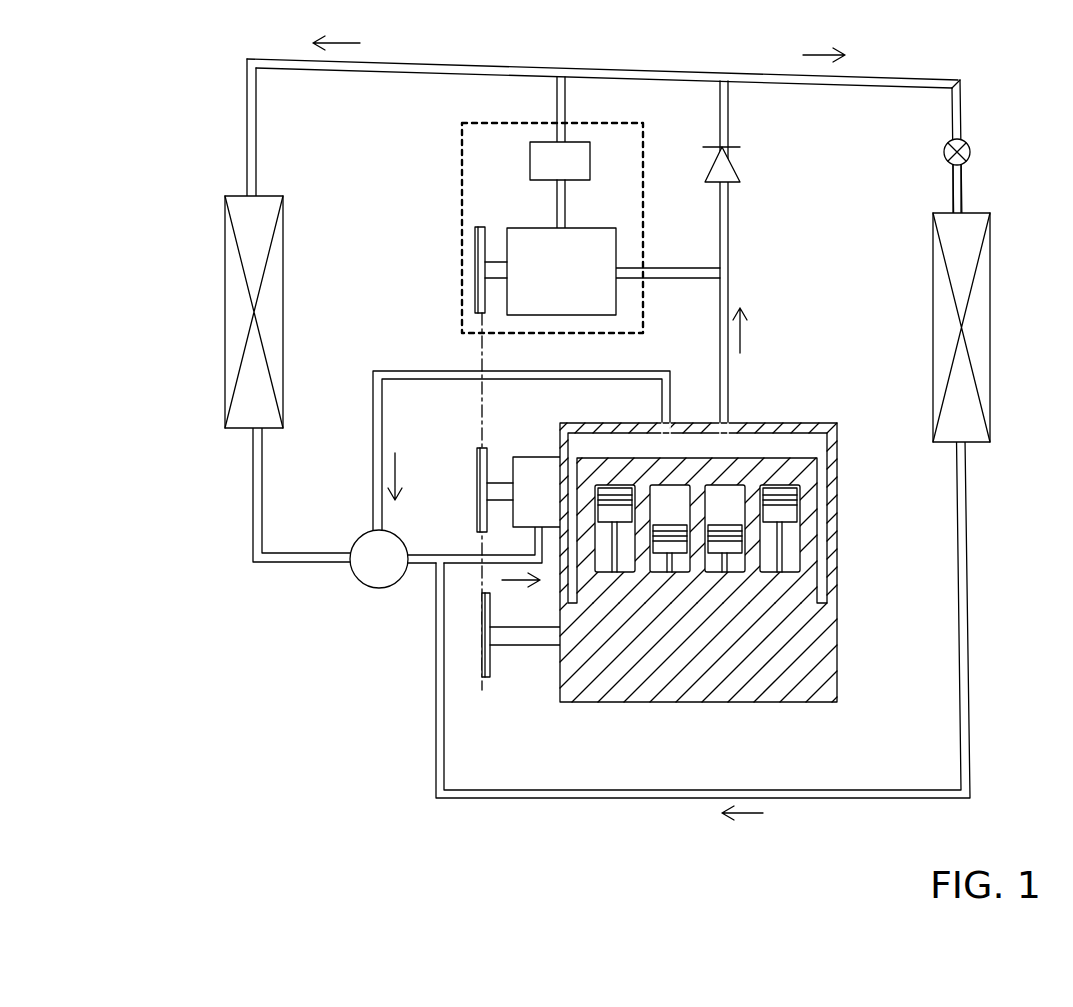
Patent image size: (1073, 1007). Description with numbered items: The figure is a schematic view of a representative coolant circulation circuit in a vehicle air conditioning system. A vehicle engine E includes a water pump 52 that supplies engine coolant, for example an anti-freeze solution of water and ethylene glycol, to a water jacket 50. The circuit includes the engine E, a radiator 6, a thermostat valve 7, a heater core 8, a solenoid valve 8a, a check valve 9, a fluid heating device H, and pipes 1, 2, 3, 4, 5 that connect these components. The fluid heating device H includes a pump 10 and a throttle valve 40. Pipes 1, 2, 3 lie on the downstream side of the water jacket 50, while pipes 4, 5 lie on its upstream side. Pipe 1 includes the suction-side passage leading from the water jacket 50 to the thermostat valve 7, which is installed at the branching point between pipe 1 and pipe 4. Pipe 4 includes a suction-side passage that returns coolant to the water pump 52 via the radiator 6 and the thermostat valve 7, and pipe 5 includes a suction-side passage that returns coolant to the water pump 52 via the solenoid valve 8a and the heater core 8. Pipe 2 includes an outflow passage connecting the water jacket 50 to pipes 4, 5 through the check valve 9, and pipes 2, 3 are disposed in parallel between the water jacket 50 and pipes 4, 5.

The pipe 1 is at (407, 371).
The pipe 2 is at (728, 218).
The pipe 3 is at (685, 280).
The pipe 4 is at (247, 132).
The pipe 5 is at (962, 100).
The radiator 6 is at (225, 293).
The thermostat valve 7 is at (379, 590).
The heater core 8 is at (992, 364).
The solenoid valve 8a is at (971, 155).
The check valve 9 is at (733, 165).
The pump 10 is at (609, 222).
The throttle valve 40 is at (603, 159).
The water jacket 50 is at (765, 447).
The water pump 52 is at (533, 472).
The vehicle engine E is at (672, 703).
The fluid heating device H is at (455, 158).